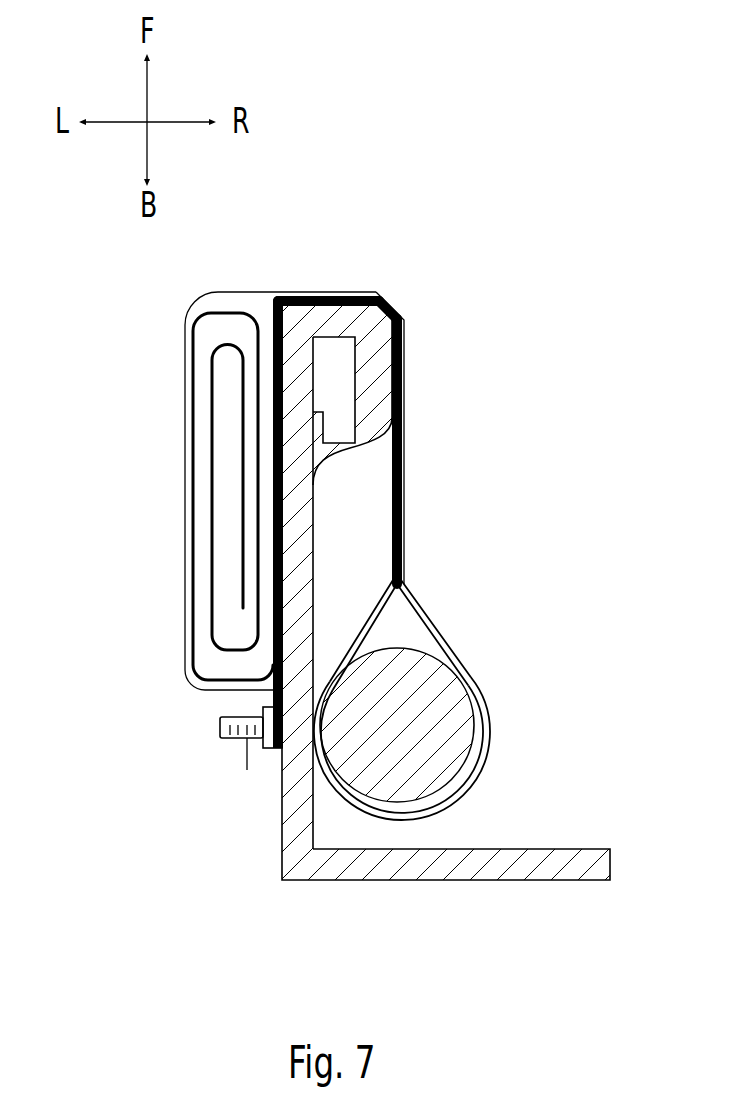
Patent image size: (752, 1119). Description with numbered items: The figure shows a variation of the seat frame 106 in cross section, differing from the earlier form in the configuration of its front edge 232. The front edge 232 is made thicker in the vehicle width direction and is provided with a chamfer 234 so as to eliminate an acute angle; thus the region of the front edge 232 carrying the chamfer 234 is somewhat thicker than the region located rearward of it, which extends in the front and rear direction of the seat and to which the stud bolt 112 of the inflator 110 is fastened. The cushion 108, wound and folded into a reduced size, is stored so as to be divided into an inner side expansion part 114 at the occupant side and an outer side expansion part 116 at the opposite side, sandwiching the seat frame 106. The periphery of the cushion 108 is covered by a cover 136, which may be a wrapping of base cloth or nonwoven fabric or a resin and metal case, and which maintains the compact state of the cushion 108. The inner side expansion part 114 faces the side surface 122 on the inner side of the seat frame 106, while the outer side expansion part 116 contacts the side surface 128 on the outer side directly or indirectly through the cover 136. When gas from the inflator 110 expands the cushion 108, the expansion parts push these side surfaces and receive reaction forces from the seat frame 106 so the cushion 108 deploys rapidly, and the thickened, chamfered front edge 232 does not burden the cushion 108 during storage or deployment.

The seat frame 106 is at (325, 882).
The cushion 108 is at (472, 663).
The inflator 110 is at (480, 733).
The stud bolt 112 is at (232, 742).
The inner side expansion part 114 is at (403, 465).
The outer side expansion part 116 is at (187, 495).
The side surface of the inner side of the seat frame 122 is at (350, 540).
The side surface of the outer side of the seat frame 128 is at (247, 717).
The cover 136 is at (187, 560).
The front edge 232 is at (333, 295).
The chamfer 234 is at (390, 303).